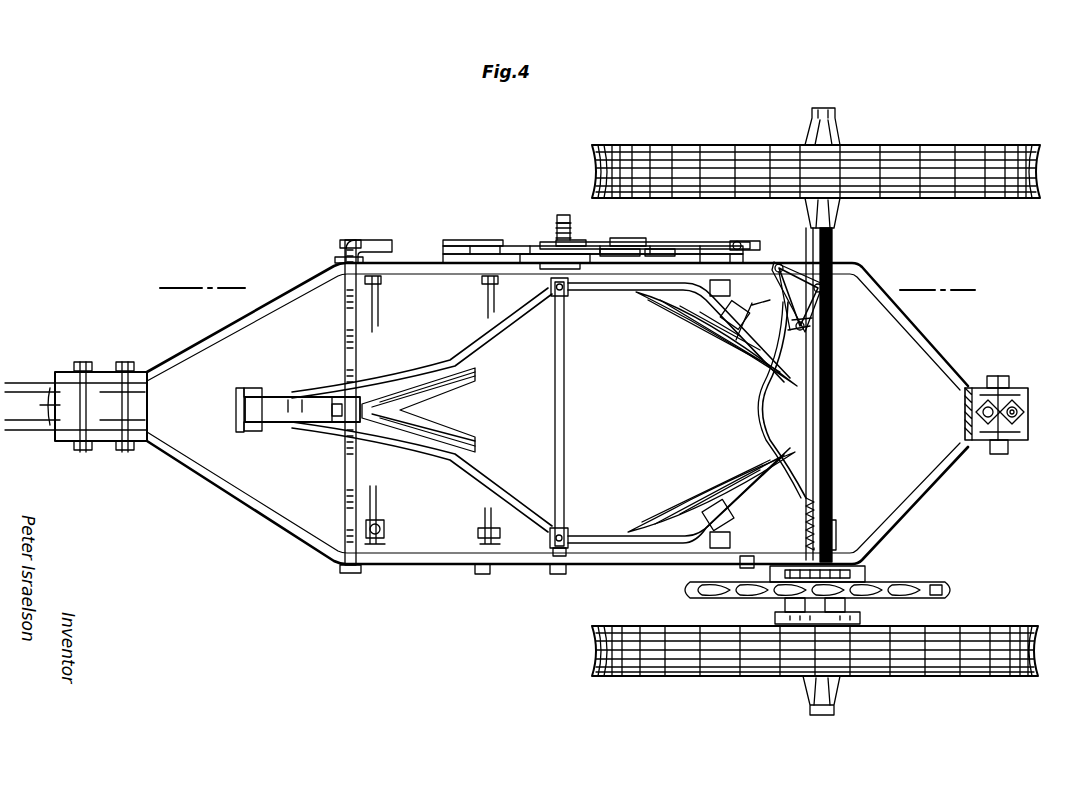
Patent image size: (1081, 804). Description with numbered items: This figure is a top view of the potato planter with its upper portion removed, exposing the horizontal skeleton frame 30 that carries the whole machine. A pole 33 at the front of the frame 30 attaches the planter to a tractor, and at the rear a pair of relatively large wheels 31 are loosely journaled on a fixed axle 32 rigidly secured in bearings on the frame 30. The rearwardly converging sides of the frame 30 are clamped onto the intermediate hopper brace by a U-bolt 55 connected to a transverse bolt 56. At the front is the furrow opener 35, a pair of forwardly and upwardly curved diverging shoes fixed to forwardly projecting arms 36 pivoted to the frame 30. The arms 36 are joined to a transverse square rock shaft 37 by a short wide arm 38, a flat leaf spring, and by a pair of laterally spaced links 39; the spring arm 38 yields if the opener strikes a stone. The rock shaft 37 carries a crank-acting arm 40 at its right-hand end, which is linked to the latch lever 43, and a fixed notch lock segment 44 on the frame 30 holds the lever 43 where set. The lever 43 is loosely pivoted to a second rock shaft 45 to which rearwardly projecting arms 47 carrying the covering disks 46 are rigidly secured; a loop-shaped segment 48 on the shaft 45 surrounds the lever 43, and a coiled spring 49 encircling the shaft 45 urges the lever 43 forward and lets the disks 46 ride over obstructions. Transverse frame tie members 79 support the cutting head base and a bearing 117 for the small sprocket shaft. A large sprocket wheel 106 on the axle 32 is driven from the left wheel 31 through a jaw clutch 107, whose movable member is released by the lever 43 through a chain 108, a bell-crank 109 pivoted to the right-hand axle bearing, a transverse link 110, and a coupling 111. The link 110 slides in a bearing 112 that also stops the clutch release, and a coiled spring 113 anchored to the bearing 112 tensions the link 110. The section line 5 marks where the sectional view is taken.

The section line 5- 5 is at (567, 291).
The horizontal skeleton frame 30 is at (240, 312).
The wheels 31 is at (692, 160).
The fixed axle 32 is at (836, 456).
The pole 33 is at (44, 436).
The furrow opener 35 is at (428, 440).
The forwardly projecting arms 36 is at (500, 326).
The transverse square rock shaft 37 is at (346, 470).
The short wide arm 38 is at (268, 424).
The laterally spaced links 39 is at (258, 396).
The crank-acting arm 40 is at (382, 243).
The latch lever 43 is at (654, 246).
The fixed notch lock segment 44 is at (488, 248).
The rock shaft 45 is at (566, 214).
The covering disks 46 is at (736, 346).
The rearwardly projecting arms 47 is at (614, 288).
The segment 48 is at (546, 256).
The coiled spring 49 is at (555, 226).
The U-bolt 55 is at (1014, 406).
The transverse bolt 56 is at (1004, 456).
The transverse frame tie members 79 is at (488, 296).
The sprocket wheel 106 is at (950, 594).
The jaw clutch 107 is at (850, 600).
The chain 108 is at (753, 306).
The bell-crank 109 is at (830, 316).
The transverse link 110 is at (762, 400).
The coupling 111 is at (822, 578).
The bearing 112 is at (836, 528).
The coiled spring 113 is at (804, 518).
The bearing 117 is at (386, 528).